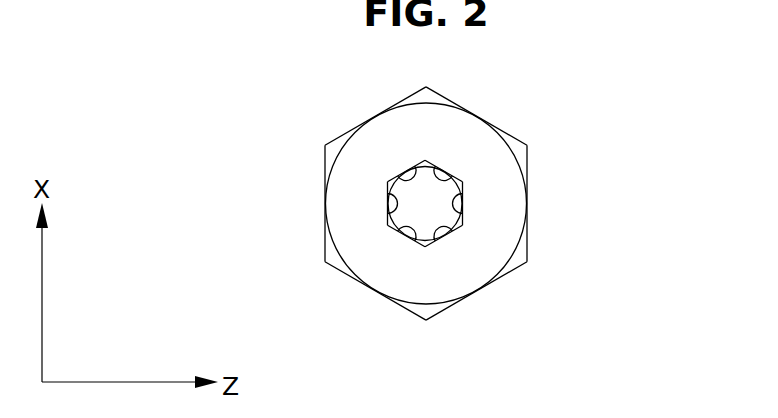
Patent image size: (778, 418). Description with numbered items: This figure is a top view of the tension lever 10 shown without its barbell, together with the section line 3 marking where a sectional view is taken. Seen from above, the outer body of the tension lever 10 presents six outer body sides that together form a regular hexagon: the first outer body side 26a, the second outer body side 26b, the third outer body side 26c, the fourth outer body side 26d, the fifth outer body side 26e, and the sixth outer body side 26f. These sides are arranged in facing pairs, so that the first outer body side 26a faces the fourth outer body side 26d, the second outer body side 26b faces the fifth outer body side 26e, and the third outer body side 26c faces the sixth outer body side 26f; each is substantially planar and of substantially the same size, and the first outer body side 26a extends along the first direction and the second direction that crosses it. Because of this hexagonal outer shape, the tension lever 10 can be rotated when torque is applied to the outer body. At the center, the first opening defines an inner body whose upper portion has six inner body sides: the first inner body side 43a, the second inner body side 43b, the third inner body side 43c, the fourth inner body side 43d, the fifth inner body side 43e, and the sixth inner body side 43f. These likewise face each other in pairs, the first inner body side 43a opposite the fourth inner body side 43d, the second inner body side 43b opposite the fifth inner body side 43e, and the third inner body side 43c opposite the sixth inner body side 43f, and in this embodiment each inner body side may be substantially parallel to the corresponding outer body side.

The tension lever 10 is at (702, 281).
The section line 3- 3 is at (222, 204).
The first outer body side 26a is at (528, 169).
The second outer body side 26b is at (508, 276).
The third outer body side 26c is at (342, 273).
The fourth outer body side 26d is at (325, 248).
The fifth outer body side 26e is at (401, 101).
The sixth outer body side 26f is at (455, 104).
The first inner body side 43a is at (463, 214).
The second inner body side 43b is at (436, 242).
The third inner body side 43c is at (415, 242).
The fourth inner body side 43d is at (389, 193).
The fifth inner body side 43e is at (415, 166).
The sixth inner body side 43f is at (452, 176).